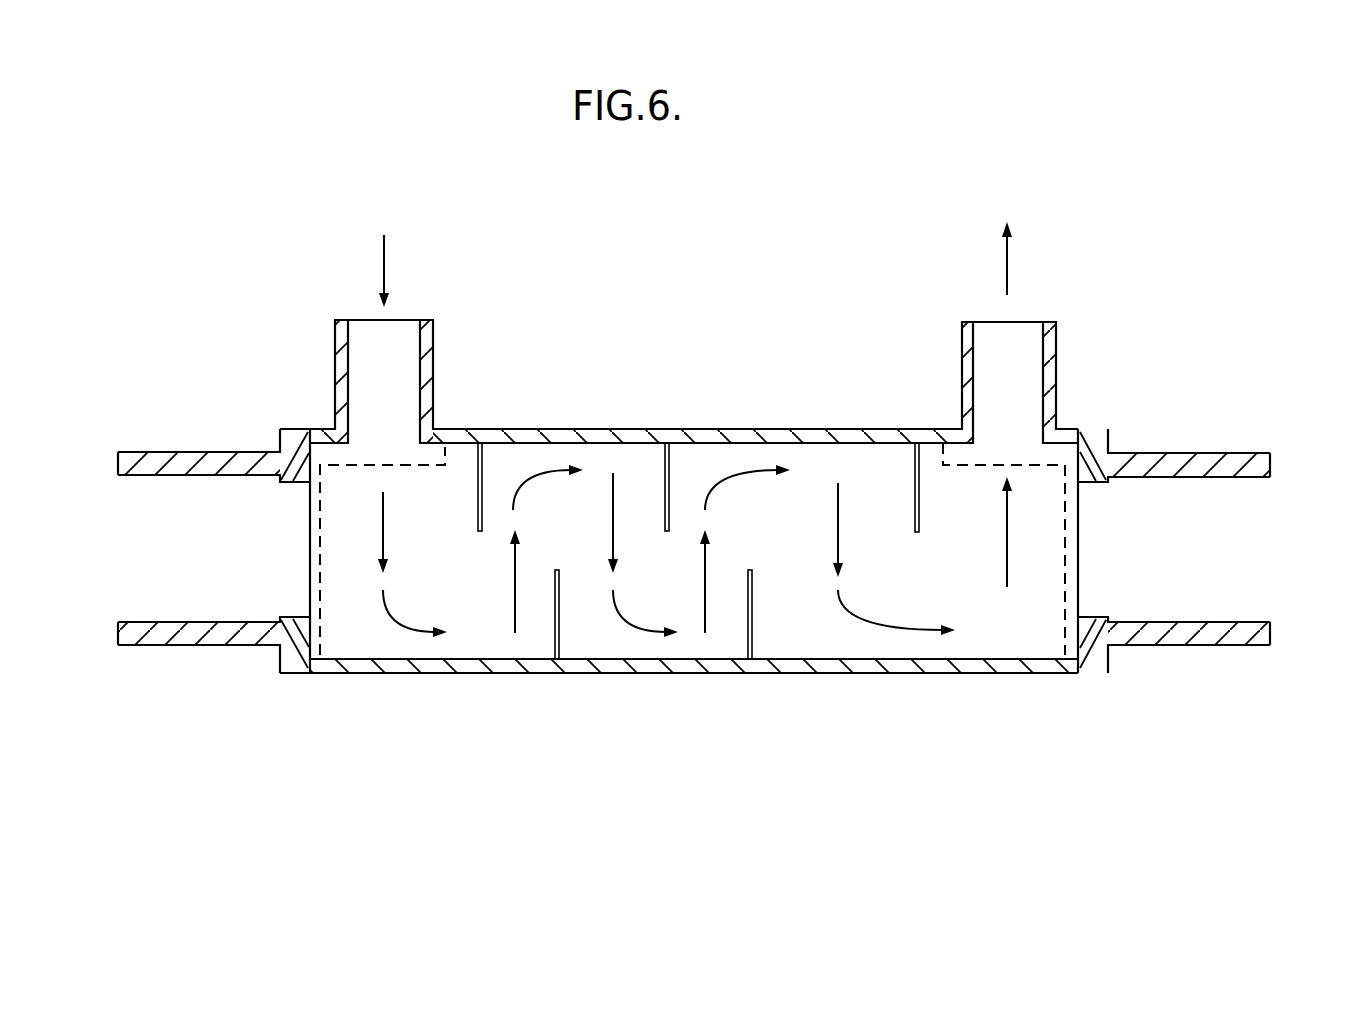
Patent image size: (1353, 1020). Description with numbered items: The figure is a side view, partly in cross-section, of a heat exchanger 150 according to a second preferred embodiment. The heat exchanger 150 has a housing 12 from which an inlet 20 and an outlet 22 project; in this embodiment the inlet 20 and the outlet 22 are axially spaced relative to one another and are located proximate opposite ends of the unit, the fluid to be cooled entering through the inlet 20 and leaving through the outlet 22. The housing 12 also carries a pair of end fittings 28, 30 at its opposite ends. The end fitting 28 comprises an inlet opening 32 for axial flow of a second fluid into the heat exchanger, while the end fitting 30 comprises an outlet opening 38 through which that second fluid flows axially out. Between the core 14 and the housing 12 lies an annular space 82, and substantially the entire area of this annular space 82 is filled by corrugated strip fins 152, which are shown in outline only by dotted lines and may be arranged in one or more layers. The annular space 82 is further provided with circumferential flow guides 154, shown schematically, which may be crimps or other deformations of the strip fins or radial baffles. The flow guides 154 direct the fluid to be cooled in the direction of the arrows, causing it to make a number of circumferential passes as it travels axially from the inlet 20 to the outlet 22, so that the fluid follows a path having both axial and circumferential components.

The housing 12 is at (610, 432).
The core 14 is at (368, 643).
The inlet 20 is at (335, 348).
The outlet 22 is at (1057, 367).
The end fitting 28 is at (175, 452).
The end fitting 30 is at (1210, 453).
The inlet opening 32 is at (142, 538).
The outlet opening 38 is at (1255, 550).
The annular space 82 is at (442, 430).
The heat exchanger 150 is at (277, 695).
The corrugated strip fin 152 is at (458, 632).
The circumferential flow guides 154 is at (487, 467).